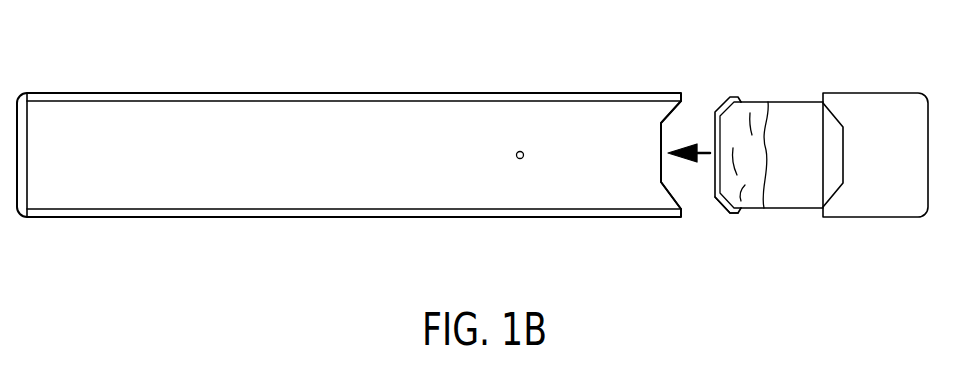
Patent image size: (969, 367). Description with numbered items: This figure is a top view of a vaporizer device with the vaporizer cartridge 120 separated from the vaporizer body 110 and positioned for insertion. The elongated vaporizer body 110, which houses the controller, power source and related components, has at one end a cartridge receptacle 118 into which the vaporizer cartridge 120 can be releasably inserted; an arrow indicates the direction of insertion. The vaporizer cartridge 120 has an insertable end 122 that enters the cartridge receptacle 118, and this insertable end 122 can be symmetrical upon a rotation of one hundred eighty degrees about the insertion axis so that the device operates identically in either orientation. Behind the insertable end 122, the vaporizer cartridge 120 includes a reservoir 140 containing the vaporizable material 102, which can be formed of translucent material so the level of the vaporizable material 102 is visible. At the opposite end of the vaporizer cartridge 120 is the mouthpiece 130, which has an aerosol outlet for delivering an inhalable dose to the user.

The vaporizer body 110 is at (153, 123).
The cartridge receptacle 118 is at (681, 106).
The vaporizer cartridge 120 is at (801, 154).
The vaporizable material 102 is at (752, 197).
The reservoir 140 is at (806, 197).
The mouthpiece 130 is at (890, 200).
The insertable end 122 is at (714, 215).